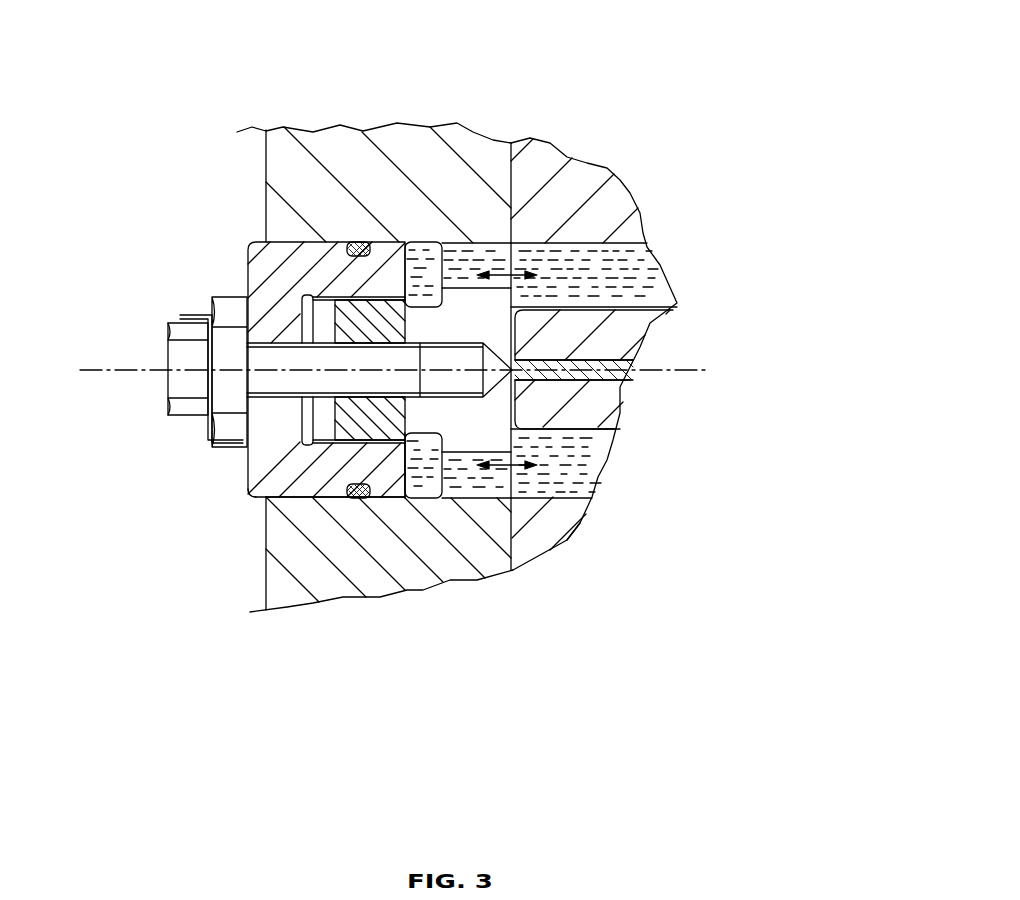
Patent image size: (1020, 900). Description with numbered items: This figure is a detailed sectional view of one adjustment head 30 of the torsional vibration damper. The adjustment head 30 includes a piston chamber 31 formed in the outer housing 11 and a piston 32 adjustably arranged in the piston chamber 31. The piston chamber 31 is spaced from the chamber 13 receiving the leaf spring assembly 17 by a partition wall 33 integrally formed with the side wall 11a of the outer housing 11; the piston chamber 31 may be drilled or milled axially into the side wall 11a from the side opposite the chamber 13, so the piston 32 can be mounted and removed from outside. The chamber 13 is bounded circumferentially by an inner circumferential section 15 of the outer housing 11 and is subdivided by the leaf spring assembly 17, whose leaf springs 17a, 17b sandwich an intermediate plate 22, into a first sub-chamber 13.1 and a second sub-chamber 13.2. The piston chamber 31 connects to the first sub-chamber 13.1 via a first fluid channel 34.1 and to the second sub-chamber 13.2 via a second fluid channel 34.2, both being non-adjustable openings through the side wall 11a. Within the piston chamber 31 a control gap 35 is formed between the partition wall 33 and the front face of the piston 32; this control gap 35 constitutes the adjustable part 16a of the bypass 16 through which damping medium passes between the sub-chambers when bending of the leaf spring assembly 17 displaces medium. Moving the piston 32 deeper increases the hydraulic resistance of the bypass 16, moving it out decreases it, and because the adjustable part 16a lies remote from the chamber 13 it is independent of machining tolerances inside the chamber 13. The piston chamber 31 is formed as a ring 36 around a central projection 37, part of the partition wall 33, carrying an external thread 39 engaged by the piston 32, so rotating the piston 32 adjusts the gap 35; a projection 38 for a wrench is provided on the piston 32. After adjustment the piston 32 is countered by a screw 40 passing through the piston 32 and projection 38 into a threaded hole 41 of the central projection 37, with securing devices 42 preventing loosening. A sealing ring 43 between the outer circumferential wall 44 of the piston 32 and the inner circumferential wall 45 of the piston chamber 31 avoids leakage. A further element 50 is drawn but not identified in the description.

The adjustment head 30 is at (210, 213).
The outer housing 11 is at (282, 147).
The side wall 11a is at (468, 217).
The inner circumferential section 15 is at (587, 183).
The chamber 13 is at (612, 268).
The first sub-chamber 13.1 is at (635, 290).
The second sub-chamber 13.2 is at (588, 455).
The leaf spring assembly 17 is at (678, 451).
The leaf spring 17a is at (625, 330).
The leaf spring 17b is at (552, 397).
The intermediate plate 22 is at (613, 373).
The piston chamber 31 is at (420, 270).
The piston 32 is at (275, 293).
The partition wall 33 is at (495, 307).
The first fluid channel 34.1 is at (483, 248).
The second fluid channel 34.2 is at (486, 465).
The control gap 35 is at (414, 465).
The ring 36 is at (427, 247).
The central projection 37 is at (253, 492).
The projection for a wrench 38 is at (227, 392).
The external thread 39 is at (280, 500).
The screw 40 is at (278, 353).
The threaded hole 41 is at (407, 437).
The securing device 42 is at (207, 437).
The sealing ring 43 is at (390, 437).
The outer circumferential wall 44 is at (372, 440).
The inner circumferential wall 45 is at (352, 425).
The bypass 16 is at (433, 487).
The adjustable part of the bypass 16a is at (418, 488).
The coolant flow 50 is at (550, 483).